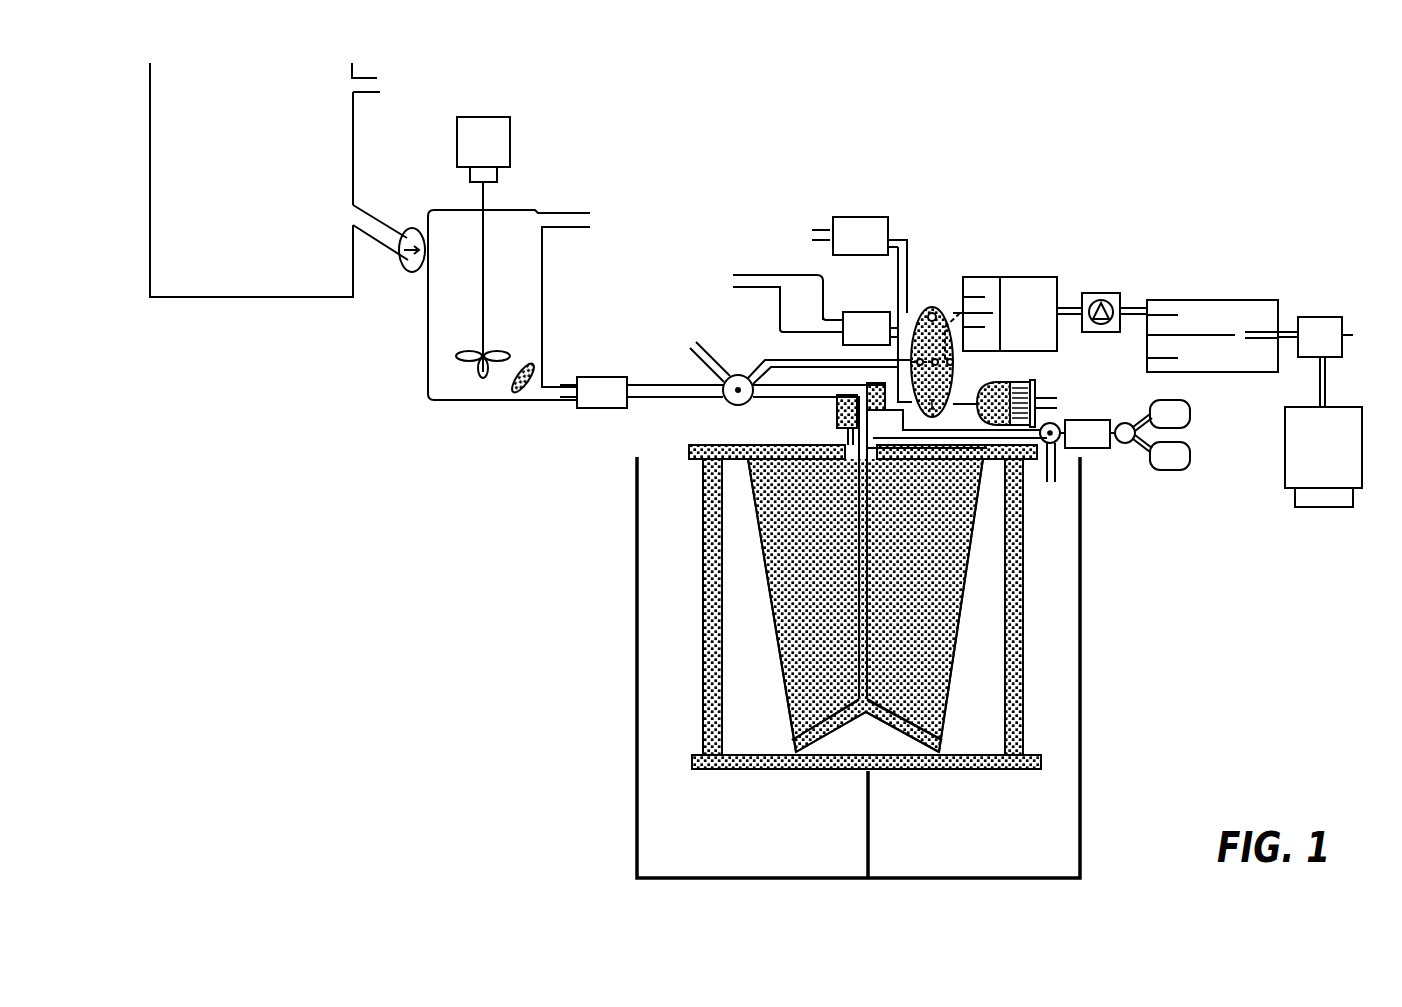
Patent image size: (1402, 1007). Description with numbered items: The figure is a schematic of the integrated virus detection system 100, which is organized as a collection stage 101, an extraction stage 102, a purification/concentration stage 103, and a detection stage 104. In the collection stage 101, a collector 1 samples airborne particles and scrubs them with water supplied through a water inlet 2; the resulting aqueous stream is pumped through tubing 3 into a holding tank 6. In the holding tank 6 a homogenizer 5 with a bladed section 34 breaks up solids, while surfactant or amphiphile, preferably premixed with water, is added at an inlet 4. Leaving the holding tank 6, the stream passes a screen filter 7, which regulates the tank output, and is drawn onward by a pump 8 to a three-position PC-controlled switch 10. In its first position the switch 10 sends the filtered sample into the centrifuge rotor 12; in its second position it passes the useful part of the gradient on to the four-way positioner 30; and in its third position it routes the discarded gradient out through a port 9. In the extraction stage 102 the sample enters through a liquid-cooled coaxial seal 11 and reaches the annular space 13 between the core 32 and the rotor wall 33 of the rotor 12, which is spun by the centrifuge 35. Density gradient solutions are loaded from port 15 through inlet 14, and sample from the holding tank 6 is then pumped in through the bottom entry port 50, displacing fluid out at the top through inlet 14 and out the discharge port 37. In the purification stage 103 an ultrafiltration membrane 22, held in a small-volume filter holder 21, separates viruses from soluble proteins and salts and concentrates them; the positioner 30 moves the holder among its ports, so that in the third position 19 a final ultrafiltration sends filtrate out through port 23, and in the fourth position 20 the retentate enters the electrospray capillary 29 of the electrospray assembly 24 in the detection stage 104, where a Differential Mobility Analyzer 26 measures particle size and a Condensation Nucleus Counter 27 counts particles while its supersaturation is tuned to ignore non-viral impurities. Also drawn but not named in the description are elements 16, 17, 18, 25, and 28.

The collector 1 is at (239, 184).
The water inlet 2 is at (378, 78).
The tubing 3 is at (422, 236).
The inlet 4 is at (577, 212).
The homogenizer 5 is at (474, 152).
The holding tank 6 is at (428, 332).
The screen filter 7 is at (515, 397).
The pump 8 is at (592, 404).
The port 9 is at (712, 355).
The three-position PC-controlled switch 10 is at (732, 405).
The liquid-cooled coaxial seal 11 is at (835, 417).
The centrifuge rotor 12 is at (851, 748).
The annular space 13 is at (965, 686).
The inlet 14 is at (986, 459).
The port 15 is at (1076, 446).
The inlet line 16 is at (753, 273).
The pipe 17 is at (788, 312).
The control unit 18 is at (878, 340).
The third position 19 is at (932, 308).
The fourth position 20 is at (955, 363).
The filter holder 21 is at (1017, 382).
The ultrafiltration membrane 22 is at (1040, 393).
The port 23 is at (848, 248).
The electrospray assembly 24 is at (1018, 325).
The pump 25 is at (1097, 290).
The Differential Mobility Analyzer 26 is at (1201, 329).
The Condensation Nucleus Counter 27 is at (1308, 349).
The processing unit 28 is at (1310, 459).
The electrospray capillary 29 is at (952, 322).
The four-way positioner 30 is at (938, 307).
The core 32 is at (764, 565).
The rotor wall 33 is at (706, 695).
The bladed section 34 is at (503, 352).
The centrifuge 35 is at (965, 841).
The discharge port 37 is at (1057, 476).
The bottom entry port 50 is at (792, 746).
The integrated virus detection system 100 is at (766, 196).
The collection stage 101 is at (386, 180).
The extraction stage 102 is at (622, 634).
The purification/concentration stage 103 is at (908, 216).
The detection stage 104 is at (1132, 288).